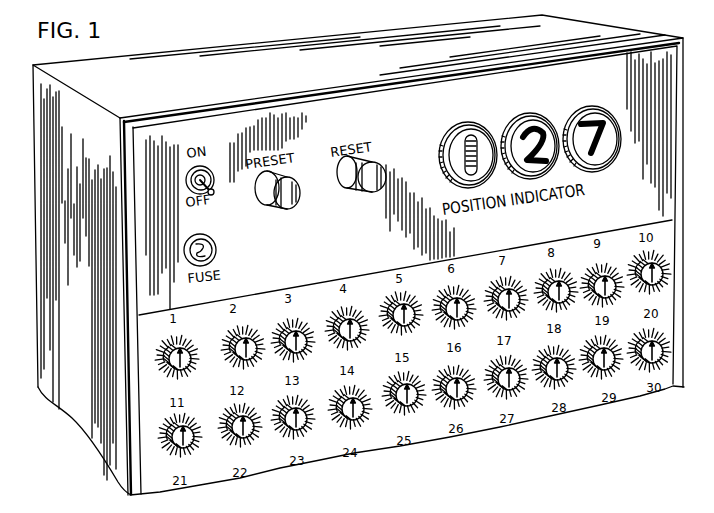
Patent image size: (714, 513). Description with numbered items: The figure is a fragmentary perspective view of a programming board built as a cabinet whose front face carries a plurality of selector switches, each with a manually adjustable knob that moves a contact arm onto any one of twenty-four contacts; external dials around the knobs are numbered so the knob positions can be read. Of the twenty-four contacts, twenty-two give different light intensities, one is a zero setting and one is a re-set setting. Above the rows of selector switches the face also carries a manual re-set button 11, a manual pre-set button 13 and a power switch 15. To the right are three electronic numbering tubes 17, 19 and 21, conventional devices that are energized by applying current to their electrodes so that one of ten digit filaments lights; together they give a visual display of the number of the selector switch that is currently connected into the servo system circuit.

The manual re-set button 11 is at (371, 192).
The manual pre-set button 13 is at (292, 208).
The power switch 15 is at (214, 194).
The electronic numbering tube 17 is at (468, 122).
The electronic numbering tube 19 is at (541, 113).
The electronic numbering tube 21 is at (603, 106).